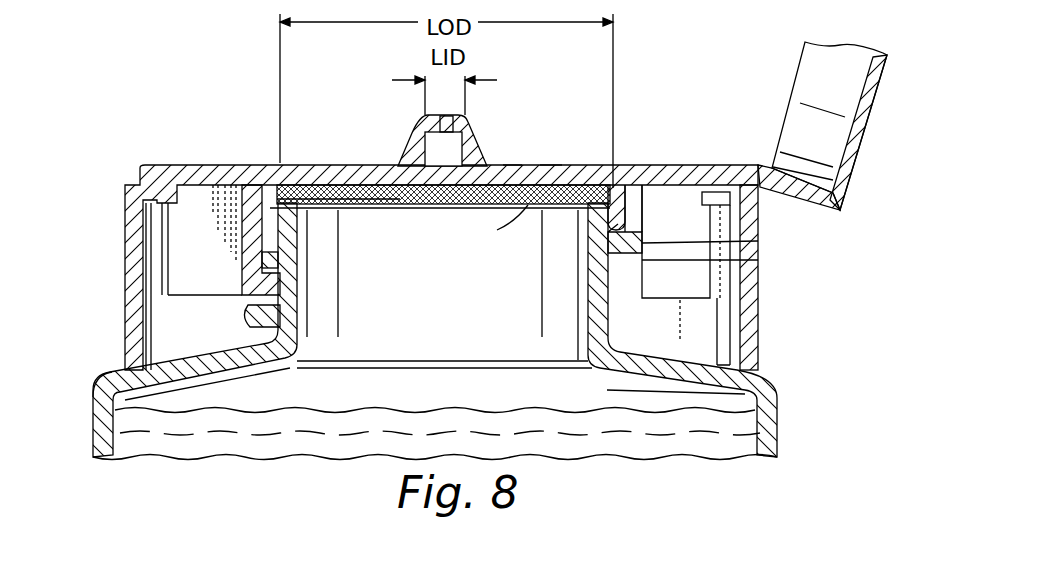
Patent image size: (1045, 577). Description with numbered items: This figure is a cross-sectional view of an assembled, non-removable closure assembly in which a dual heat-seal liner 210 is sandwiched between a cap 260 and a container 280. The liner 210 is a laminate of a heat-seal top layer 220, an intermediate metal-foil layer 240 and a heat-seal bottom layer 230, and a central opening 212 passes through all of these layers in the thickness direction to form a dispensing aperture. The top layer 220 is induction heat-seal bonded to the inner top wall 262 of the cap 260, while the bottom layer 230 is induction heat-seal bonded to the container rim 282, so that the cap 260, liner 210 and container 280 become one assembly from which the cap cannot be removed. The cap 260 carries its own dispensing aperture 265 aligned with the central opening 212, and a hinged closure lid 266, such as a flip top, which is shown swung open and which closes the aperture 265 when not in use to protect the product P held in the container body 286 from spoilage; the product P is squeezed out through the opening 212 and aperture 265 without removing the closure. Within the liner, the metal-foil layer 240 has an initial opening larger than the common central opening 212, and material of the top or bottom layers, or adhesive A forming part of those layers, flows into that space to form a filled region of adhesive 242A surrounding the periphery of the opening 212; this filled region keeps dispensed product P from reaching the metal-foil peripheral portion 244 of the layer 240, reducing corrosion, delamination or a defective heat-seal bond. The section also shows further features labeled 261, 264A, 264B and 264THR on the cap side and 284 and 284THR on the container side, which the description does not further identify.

The dual heat-seal liner 210 is at (307, 162).
The central opening 212 is at (437, 210).
The heat-seal top layer 220 is at (277, 190).
The heat-seal bottom layer 230 is at (253, 190).
The metal-foil layer 240 is at (265, 190).
The adhesive 242A is at (366, 204).
The metal-foil peripheral portion 244 is at (322, 187).
The cap 260 is at (766, 301).
The lid top panel 261 is at (550, 162).
The inner top wall 262 is at (511, 165).
The lid inner skirt 264A is at (742, 266).
The lid outer skirt 264B is at (760, 327).
The lid thread 264THR is at (742, 240).
The dispensing aperture 265 is at (442, 117).
The hinged closure lid 266 is at (890, 54).
The container 280 is at (775, 430).
The container rim 282 is at (633, 183).
The container body 284 is at (420, 337).
The container thread 284THR is at (668, 185).
The container body 286 is at (93, 403).
The adhesive A is at (504, 229).
The product P is at (437, 429).